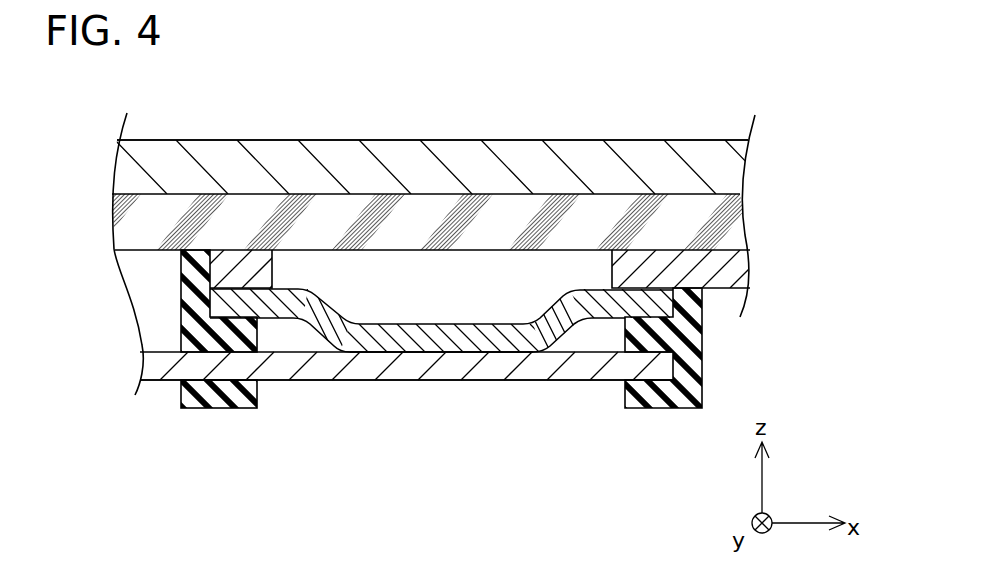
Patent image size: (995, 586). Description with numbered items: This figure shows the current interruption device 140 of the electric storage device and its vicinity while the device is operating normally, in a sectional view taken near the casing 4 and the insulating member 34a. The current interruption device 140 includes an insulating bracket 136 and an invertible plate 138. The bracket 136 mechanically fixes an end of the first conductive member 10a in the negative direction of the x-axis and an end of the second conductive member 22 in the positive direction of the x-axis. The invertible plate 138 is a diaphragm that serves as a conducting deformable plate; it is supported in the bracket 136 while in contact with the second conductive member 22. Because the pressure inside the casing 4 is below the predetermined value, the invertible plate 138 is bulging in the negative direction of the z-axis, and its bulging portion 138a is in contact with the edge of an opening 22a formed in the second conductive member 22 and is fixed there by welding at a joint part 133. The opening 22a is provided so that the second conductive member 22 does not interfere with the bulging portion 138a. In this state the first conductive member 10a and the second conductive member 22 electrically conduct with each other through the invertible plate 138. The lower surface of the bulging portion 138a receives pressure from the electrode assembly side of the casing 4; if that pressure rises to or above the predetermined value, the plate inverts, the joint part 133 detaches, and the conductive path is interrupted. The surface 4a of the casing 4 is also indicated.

The casing 4 is at (465, 160).
The outer surface of cover member 4a is at (575, 157).
The insulating member 34a is at (407, 220).
The first conductive member 10a is at (236, 268).
The second conductive member 22 is at (153, 368).
The opening 22a is at (508, 403).
The joint part 133 is at (363, 357).
The insulating bracket 136 is at (207, 400).
The invertible plate 138 is at (468, 343).
The bulging portion 138a is at (417, 357).
The current interruption device 140 is at (429, 377).